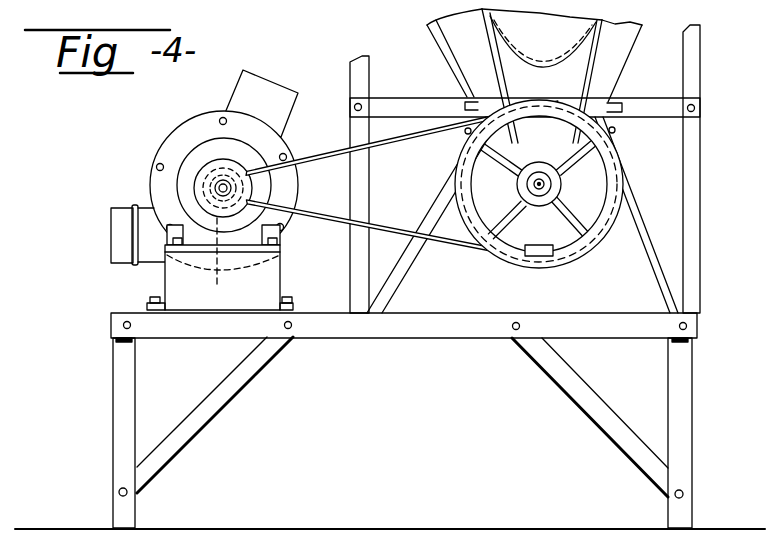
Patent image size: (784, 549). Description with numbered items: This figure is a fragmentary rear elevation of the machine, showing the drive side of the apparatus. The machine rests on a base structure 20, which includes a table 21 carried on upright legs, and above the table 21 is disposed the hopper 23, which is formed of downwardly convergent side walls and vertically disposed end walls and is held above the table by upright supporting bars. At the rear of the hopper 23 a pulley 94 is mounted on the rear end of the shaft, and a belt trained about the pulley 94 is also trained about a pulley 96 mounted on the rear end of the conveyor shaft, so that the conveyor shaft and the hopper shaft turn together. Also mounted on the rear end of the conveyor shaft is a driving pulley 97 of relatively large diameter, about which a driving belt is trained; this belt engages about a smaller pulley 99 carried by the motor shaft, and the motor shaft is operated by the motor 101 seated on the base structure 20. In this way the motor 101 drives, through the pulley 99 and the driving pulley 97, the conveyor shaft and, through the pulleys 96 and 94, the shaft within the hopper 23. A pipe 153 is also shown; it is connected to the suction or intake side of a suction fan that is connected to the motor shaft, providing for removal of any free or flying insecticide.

The base structure 20 is at (110, 323).
The table 21 is at (318, 313).
The hopper 23 is at (630, 60).
The pulley 94 is at (514, 76).
The pulley 96 is at (516, 186).
The driving pulley 97 is at (583, 262).
The pulley 99 is at (218, 276).
The motor 101 is at (180, 175).
The pipe 153 is at (262, 88).